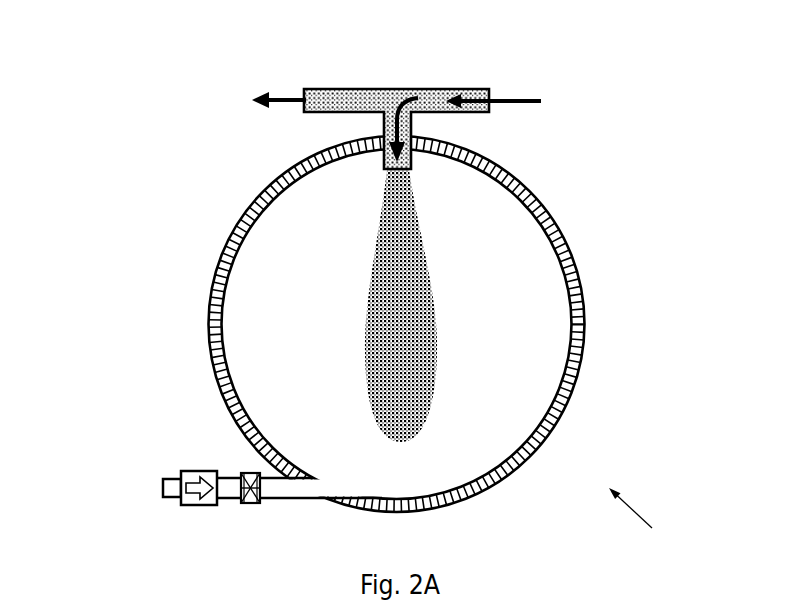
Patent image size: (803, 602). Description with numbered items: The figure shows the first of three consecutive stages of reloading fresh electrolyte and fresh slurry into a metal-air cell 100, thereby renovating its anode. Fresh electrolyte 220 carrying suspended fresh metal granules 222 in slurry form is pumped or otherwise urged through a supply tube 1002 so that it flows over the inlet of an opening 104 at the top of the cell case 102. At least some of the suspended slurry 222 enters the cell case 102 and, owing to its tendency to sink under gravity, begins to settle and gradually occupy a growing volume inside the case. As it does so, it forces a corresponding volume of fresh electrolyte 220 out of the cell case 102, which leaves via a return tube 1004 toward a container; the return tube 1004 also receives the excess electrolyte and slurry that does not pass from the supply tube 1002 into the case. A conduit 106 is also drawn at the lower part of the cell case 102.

The metal-air cell 100 is at (648, 520).
The cell case 102 is at (575, 379).
The opening 104 is at (412, 133).
The outlet conduit 106 is at (305, 491).
The fresh electrolyte 220 is at (263, 263).
The fresh metal granules 222 is at (375, 273).
The supply tube 1002 is at (430, 83).
The return tube 1004 is at (363, 88).